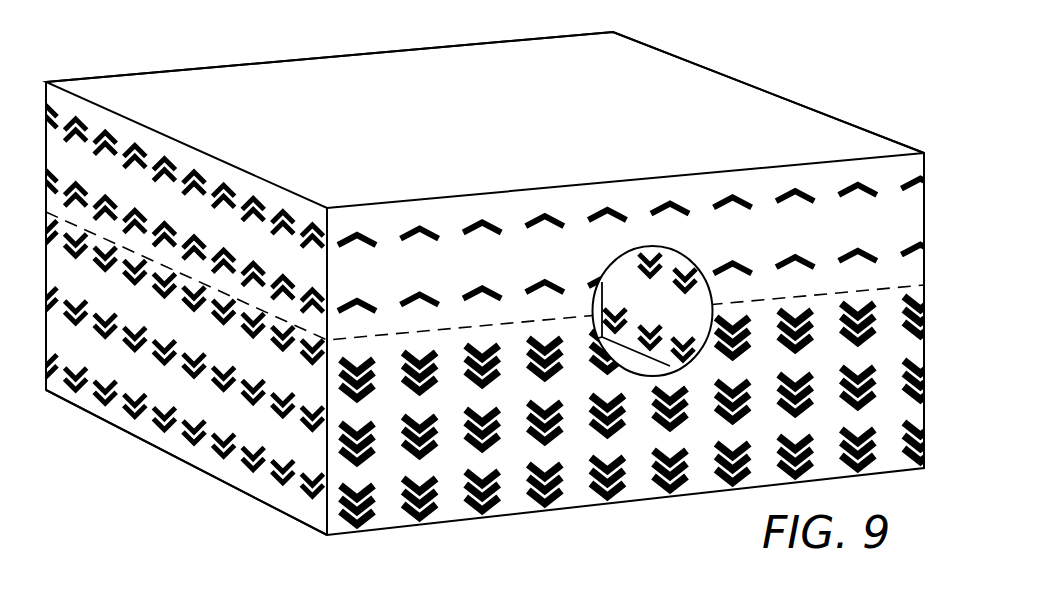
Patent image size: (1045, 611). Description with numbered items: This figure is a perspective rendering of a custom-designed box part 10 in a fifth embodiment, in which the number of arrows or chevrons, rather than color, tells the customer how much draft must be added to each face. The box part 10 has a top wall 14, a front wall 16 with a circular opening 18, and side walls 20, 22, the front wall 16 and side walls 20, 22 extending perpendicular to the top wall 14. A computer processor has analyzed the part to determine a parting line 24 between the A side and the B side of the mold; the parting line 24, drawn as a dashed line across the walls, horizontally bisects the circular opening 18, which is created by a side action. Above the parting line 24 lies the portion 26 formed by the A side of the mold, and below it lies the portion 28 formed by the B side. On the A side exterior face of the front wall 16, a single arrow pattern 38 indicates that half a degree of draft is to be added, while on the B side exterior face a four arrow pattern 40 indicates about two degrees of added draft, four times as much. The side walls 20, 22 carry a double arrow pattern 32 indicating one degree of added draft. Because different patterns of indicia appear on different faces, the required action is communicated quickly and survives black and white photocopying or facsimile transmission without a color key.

The box part 10 is at (842, 111).
The top wall 14 is at (230, 125).
The front wall 16 is at (440, 478).
The circular opening 18 is at (630, 378).
The side wall 20 is at (155, 373).
The side wall 22 is at (667, 305).
The parting line 24 is at (290, 332).
The portion created by the A side of the mold 26 is at (892, 187).
The portion created by the B side of the mold 28 is at (287, 395).
The double arrow pattern 32 is at (303, 495).
The single arrow pattern 38 is at (688, 211).
The four arrow pattern 40 is at (553, 500).